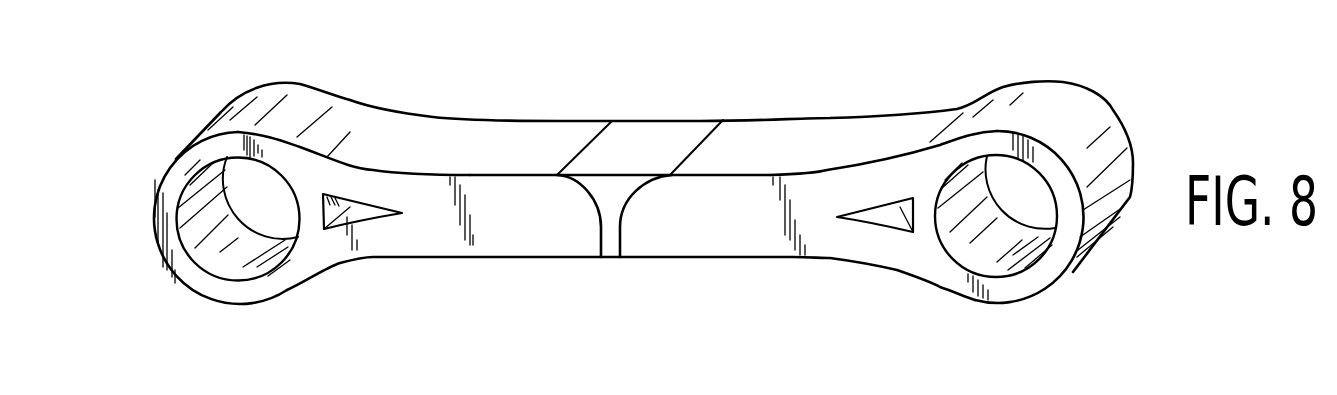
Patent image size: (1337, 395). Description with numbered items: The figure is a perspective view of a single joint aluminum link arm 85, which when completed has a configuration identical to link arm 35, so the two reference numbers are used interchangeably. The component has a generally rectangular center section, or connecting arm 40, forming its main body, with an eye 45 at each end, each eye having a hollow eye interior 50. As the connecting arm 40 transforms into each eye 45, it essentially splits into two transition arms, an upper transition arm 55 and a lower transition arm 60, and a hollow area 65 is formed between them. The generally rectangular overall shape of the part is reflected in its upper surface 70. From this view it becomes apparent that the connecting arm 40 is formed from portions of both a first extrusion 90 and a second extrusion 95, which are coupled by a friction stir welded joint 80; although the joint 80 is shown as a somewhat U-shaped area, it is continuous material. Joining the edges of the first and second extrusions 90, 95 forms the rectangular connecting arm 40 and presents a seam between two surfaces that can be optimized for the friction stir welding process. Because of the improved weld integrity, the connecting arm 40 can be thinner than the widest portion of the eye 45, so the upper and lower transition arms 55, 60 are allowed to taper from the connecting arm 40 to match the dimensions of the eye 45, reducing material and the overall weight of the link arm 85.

The link arm 35 is at (783, 97).
The center section 40 is at (566, 136).
The eye 45 is at (202, 150).
The hollow eye interior 50 is at (214, 241).
The upper transition arm 55 is at (310, 177).
The lower transition arm 60 is at (370, 240).
The hollow area 65 is at (352, 212).
The upper surface 70 is at (492, 128).
The friction stir welded joint 80 is at (685, 123).
The single joint link arm 85 is at (841, 108).
The first extrusion 90 is at (516, 230).
The second extrusion 95 is at (682, 233).